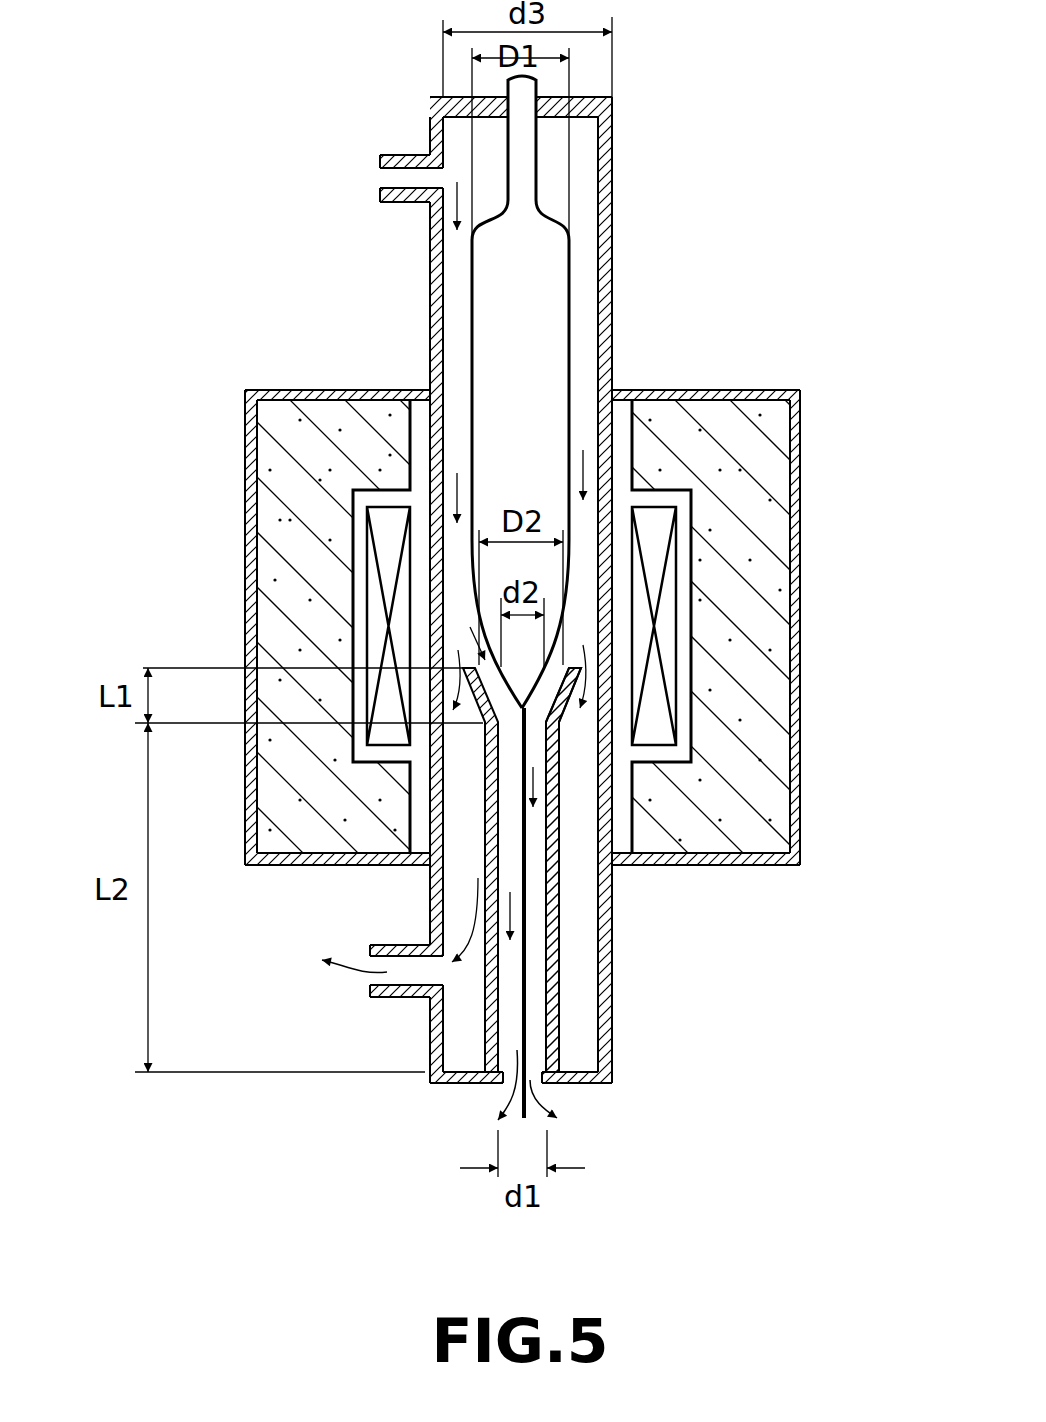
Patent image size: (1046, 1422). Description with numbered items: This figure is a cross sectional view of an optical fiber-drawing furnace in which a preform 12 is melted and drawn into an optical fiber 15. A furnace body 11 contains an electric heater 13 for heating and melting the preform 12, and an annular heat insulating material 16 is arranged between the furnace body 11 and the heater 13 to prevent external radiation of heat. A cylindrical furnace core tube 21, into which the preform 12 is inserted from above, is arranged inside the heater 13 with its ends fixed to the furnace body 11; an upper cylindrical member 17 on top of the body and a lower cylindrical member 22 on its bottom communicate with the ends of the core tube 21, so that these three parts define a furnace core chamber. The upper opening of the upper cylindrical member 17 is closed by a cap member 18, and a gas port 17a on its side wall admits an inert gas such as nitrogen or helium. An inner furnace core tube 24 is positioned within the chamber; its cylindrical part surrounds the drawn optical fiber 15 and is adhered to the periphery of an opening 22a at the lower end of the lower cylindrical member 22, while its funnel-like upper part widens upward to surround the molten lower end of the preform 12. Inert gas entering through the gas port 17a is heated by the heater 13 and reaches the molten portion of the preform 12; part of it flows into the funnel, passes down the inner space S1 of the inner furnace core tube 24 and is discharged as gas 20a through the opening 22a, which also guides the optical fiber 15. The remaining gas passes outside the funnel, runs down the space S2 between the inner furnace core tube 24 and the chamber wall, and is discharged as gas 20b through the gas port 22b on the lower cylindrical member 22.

The furnace body 11 is at (770, 390).
The preform 12 is at (553, 320).
The electric heater 13 is at (377, 598).
The optical fiber 15 is at (524, 992).
The heat insulating material 16 is at (275, 450).
The upper cylindrical member 17 is at (605, 193).
The gas port 17a is at (390, 160).
The cap member 18 is at (593, 105).
The discharged gas 20a is at (498, 1090).
The discharged gas 20b is at (330, 998).
The cylindrical furnace core tube 21 is at (600, 783).
The lower cylindrical member 22 is at (613, 933).
The opening 22a is at (556, 1062).
The gas port 22b is at (388, 945).
The inner furnace core tube 24 is at (560, 810).
The inner space S1 is at (510, 780).
The outer space S2 is at (457, 834).